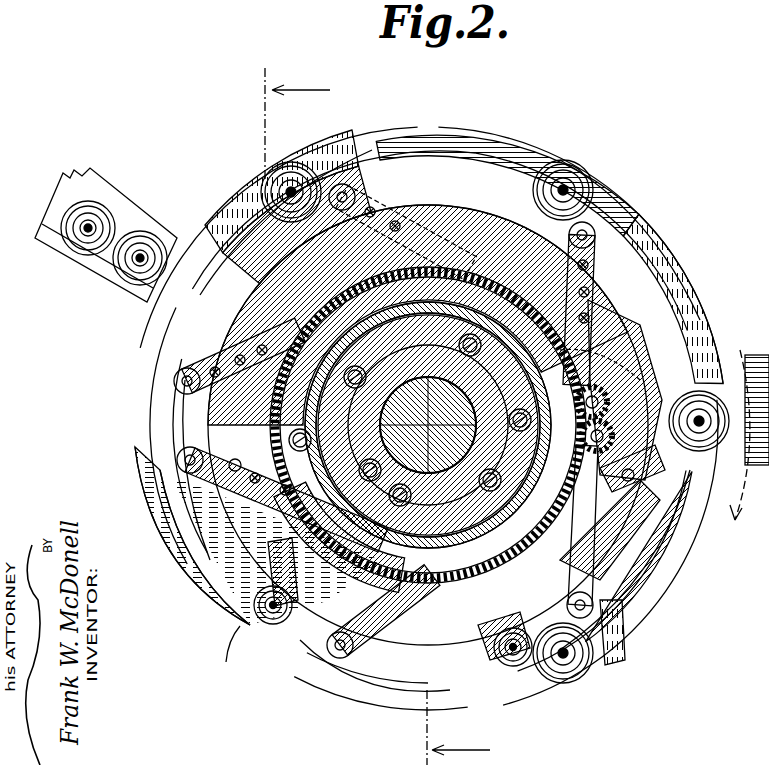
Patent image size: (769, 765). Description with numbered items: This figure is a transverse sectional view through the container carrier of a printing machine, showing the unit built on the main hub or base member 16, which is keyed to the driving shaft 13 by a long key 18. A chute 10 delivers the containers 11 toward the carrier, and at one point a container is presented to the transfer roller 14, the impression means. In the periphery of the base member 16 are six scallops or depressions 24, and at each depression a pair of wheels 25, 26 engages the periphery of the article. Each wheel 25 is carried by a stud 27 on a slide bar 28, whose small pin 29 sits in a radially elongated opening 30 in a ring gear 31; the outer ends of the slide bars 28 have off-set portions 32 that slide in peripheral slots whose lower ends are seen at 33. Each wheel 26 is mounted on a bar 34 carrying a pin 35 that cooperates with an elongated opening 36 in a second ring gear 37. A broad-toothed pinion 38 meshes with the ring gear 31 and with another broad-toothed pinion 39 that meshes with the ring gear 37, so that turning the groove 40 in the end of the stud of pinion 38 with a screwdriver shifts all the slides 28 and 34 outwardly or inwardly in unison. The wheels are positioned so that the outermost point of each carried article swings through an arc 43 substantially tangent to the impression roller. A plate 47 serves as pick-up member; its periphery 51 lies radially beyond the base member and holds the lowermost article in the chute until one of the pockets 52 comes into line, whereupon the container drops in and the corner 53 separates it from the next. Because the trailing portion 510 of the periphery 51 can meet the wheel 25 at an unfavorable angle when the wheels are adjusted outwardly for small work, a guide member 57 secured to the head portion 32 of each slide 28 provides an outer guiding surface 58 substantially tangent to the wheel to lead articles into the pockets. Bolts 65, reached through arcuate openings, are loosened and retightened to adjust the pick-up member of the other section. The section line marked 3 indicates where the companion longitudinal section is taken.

The section line 3- 3 is at (368, 416).
The chute 10 is at (75, 185).
The containers 11 is at (291, 185).
The shaft 13 is at (444, 340).
The transfer roller 14 is at (746, 447).
The main hub or base member 16 is at (452, 223).
The long key 18 is at (398, 328).
The scallops or depressions 24 is at (318, 182).
The wheel 25 is at (335, 172).
The wheel 26 is at (260, 188).
The stud 27 is at (353, 197).
The slide bar 28 is at (413, 240).
The small pin 29 is at (480, 328).
The opening 30 is at (556, 362).
The ring gear 31 is at (489, 295).
The off-set portions 32 is at (268, 565).
The lower ends of slots 33 is at (396, 264).
The bar 34 is at (250, 286).
The pin 35 is at (306, 500).
The opening 36 is at (320, 414).
The ring gear 37 is at (346, 582).
The broad-toothed pinion 38 is at (630, 495).
The broad-toothed pinion 39 is at (613, 367).
The groove 40 is at (592, 455).
The arc 43 is at (640, 627).
The plate (pick-up member) 47 is at (228, 210).
The periphery 51 is at (185, 246).
The pockets 52 is at (156, 452).
The corner 53 is at (262, 178).
The guide member 57 is at (415, 160).
The outer guiding surface 58 is at (436, 146).
The bolts 65 is at (396, 582).
The trailing portion 510 is at (156, 352).